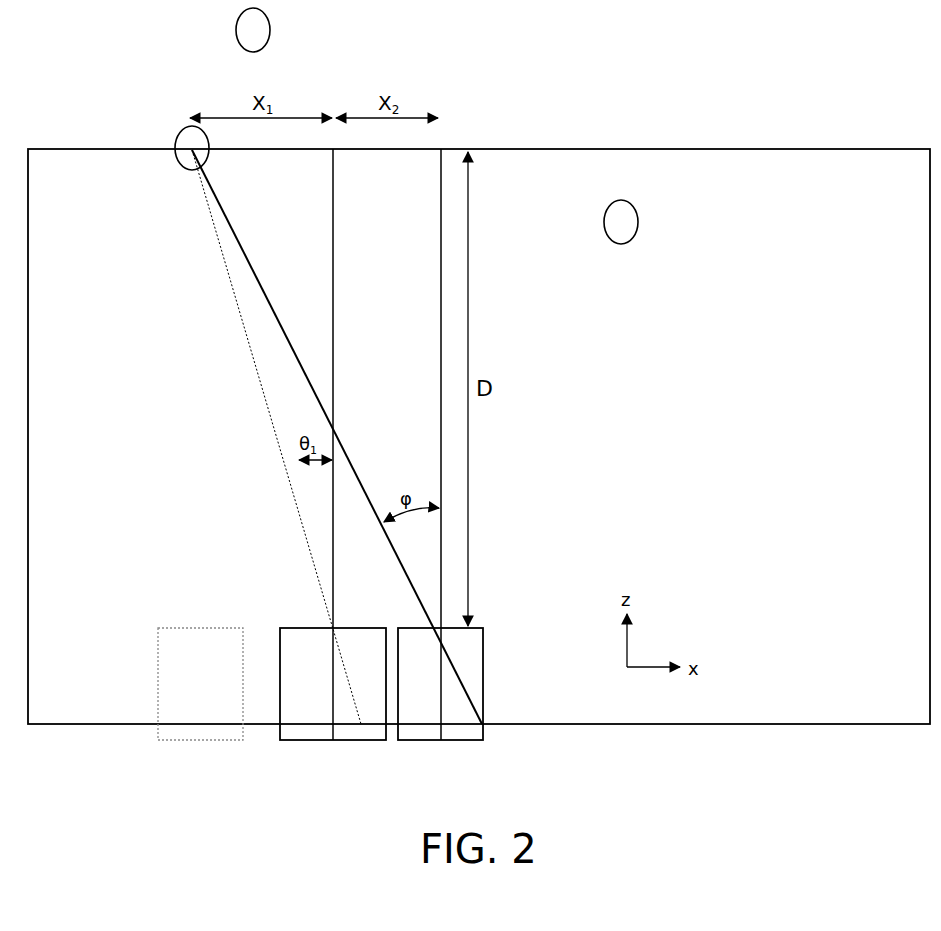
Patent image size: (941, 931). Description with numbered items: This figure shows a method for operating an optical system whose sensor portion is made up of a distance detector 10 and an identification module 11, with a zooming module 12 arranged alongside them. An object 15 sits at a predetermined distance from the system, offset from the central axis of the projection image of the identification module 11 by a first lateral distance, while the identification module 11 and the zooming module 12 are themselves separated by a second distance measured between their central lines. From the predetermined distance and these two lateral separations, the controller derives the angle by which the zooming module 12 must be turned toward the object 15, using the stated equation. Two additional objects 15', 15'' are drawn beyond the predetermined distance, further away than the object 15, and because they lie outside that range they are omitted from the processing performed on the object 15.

The distance detector 10 is at (175, 740).
The identification module 11 is at (333, 742).
The zooming module 12 is at (441, 742).
The object 15 is at (161, 135).
The additional object 15' is at (216, 30).
The additional object 15'' is at (661, 222).